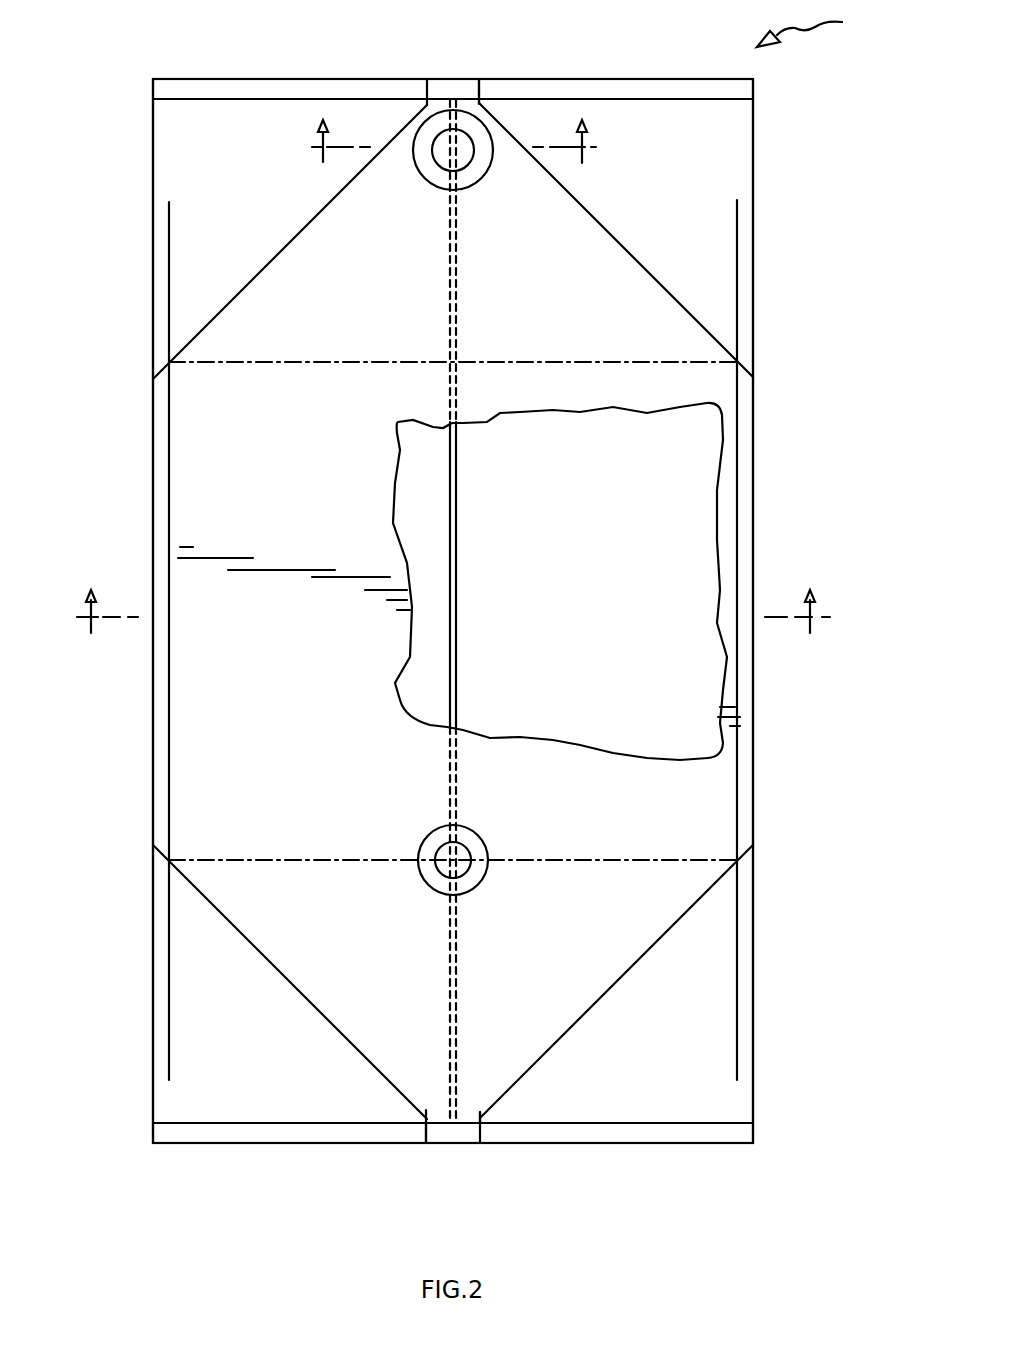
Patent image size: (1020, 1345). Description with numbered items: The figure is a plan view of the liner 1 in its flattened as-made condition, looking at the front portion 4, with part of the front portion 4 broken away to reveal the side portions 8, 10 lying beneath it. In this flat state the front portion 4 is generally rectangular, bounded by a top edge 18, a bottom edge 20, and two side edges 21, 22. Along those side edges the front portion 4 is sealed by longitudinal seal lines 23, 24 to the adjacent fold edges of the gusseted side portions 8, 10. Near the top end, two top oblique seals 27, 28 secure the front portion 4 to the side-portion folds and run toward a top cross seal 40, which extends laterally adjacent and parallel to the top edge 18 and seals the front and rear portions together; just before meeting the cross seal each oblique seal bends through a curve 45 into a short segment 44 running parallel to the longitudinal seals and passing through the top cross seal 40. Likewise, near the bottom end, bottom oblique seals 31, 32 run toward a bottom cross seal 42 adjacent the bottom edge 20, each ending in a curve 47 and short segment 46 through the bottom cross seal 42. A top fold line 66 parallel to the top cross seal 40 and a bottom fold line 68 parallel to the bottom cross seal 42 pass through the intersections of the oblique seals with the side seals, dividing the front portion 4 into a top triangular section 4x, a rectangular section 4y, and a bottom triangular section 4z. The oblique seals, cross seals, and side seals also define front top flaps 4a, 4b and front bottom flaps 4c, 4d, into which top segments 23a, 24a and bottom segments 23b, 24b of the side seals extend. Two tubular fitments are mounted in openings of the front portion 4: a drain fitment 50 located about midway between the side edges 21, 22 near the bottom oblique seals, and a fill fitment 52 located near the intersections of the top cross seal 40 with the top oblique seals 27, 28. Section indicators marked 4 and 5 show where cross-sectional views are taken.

The liner 1 is at (381, 27).
The front portion 4 is at (456, 321).
The section view indicator 5 is at (454, 142).
The side portion 8 is at (415, 494).
The side portion 10 is at (566, 521).
The top edge 18 is at (450, 79).
The bottom edge 20 is at (467, 1143).
The side edge 21 is at (153, 407).
The side edge 22 is at (753, 393).
The longitudinal seal line 23 is at (169, 497).
The top segment 23a is at (169, 265).
The bottom segment 23b is at (169, 968).
The longitudinal seal line 24 is at (737, 545).
The top segment 24a is at (737, 250).
The bottom segment 24b is at (737, 1010).
The top oblique seal 27 is at (258, 274).
The top oblique seal 28 is at (612, 236).
The bottom oblique seal 31 is at (240, 932).
The bottom oblique seal 32 is at (678, 920).
The top cross seal 40 is at (603, 99).
The bottom cross seal 42 is at (610, 1123).
The short segment 44 is at (482, 90).
The curve 45 is at (483, 103).
The short segment 46 is at (426, 1130).
The curve 47 is at (480, 1115).
The drain fitment 50 is at (480, 830).
The fill fitment 52 is at (430, 188).
The top fold line 66 is at (557, 362).
The bottom fold line 68 is at (577, 860).
The front top flap 4a is at (228, 154).
The front top flap 4b is at (642, 149).
The front bottom flap 4c is at (680, 1042).
The front bottom flap 4d is at (222, 1064).
The top triangular section 4x is at (357, 286).
The rectangular section 4y is at (288, 517).
The bottom triangular section 4z is at (380, 971).